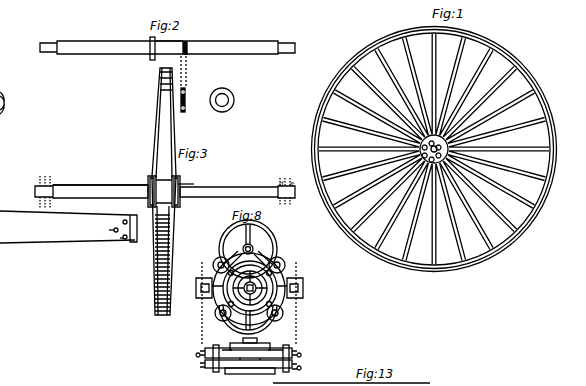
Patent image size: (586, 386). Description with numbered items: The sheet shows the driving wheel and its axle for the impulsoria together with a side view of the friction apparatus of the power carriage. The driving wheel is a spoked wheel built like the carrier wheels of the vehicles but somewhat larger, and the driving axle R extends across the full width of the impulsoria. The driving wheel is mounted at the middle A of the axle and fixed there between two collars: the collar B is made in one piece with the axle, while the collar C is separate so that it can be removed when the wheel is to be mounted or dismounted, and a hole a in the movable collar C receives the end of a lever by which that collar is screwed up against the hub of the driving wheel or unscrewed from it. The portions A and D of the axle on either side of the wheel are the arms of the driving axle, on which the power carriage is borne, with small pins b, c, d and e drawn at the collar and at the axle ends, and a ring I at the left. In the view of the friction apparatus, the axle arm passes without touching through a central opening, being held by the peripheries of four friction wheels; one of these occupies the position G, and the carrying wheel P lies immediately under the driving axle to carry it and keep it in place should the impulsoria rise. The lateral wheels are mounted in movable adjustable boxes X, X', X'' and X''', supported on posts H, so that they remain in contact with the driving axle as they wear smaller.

In FIG. 2, the driving axle middle / arm A is at (156, 48).
In FIG. 3, the driving axle middle / arm A is at (87, 191).
In FIG. 8, the driving axle middle / arm A is at (217, 264).
In FIG. 2, the fixed collar B is at (188, 71).
In FIG. 3, the fixed collar B is at (77, 207).
In FIG. 8, the fixed collar B is at (281, 264).
In FIG. 2, the movable collar C is at (215, 100).
In FIG. 3, the movable collar C is at (181, 193).
In FIG. 8, the movable collar C is at (220, 316).
In FIG. 3, the arm of the driving axle D is at (241, 194).
In FIG. 8, the arm of the driving axle D is at (278, 316).
In FIG. 2, the axle rod R is at (169, 47).
In FIG. 3, the axle rod R is at (100, 190).
In FIG. 3, the hole in the movable collar a is at (158, 203).
In FIG. 8, the hole in the movable collar a is at (229, 274).
In FIG. 3, the pin b is at (109, 231).
In FIG. 8, the pin b is at (271, 270).
In FIG. 3, the pin c is at (119, 240).
In FIG. 8, the pin c is at (234, 309).
In FIG. 3, the pin d is at (35, 192).
In FIG. 8, the pin d is at (272, 309).
In FIG. 3, the pin e is at (52, 192).
In FIG. 8, the friction wheel axle position G is at (245, 249).
In FIG. 8, the post H is at (251, 354).
In FIG. 8, the carrying wheel P is at (250, 341).
In FIG. 8, the movable adjustable box X is at (239, 354).
In FIG. 8, the movable adjustable box X' is at (300, 355).
In FIG. 8, the movable adjustable box X'' is at (240, 367).
In FIG. 8, the movable adjustable box X''' is at (268, 370).
In FIG. 3, the wheel I is at (5, 103).